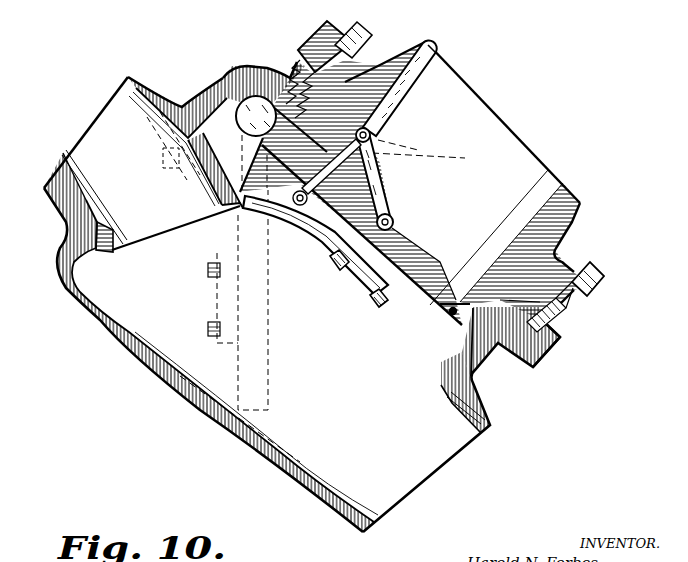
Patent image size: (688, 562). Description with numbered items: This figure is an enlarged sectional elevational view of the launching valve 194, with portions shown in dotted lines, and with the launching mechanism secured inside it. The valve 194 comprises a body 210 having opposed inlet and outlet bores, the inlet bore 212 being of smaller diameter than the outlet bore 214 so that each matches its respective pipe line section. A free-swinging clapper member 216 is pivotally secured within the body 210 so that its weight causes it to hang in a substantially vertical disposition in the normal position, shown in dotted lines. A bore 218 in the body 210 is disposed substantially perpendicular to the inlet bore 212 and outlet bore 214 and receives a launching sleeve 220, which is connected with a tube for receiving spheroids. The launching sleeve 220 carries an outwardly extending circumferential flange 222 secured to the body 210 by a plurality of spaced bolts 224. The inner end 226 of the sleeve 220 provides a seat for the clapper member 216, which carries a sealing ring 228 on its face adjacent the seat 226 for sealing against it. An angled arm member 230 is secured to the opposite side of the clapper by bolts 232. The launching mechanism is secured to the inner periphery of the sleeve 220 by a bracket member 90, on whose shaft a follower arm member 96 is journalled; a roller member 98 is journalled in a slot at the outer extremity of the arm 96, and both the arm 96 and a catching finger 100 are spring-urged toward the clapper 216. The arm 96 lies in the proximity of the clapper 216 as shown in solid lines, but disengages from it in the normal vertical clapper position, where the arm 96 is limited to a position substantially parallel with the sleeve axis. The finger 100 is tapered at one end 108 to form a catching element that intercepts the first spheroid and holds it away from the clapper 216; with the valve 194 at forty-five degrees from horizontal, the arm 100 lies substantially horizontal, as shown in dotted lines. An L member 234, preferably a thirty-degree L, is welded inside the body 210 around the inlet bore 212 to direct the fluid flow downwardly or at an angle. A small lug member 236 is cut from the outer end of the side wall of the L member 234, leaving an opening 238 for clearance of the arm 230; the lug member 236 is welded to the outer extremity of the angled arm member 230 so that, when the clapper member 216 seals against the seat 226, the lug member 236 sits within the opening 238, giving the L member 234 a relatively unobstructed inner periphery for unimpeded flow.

The bracket member 90 is at (448, 66).
The follower arm member 96 is at (335, 163).
The roller member 98 is at (297, 206).
The catching finger 100 is at (408, 103).
The tapered end 108 is at (436, 54).
The valve 194 is at (225, 74).
The body 210 is at (288, 462).
The inlet bore 212 is at (140, 98).
The outlet bore 214 is at (451, 404).
The clapper member 216 is at (262, 367).
The bore 218 is at (494, 282).
The launching sleeve 220 is at (580, 206).
The circumferential flange 222 is at (598, 305).
The bolts 224 is at (607, 258).
The inner end 226 is at (440, 316).
The sealing ring 228 is at (267, 162).
The angled arm member 230 is at (224, 235).
The bolts 232 is at (208, 329).
The L member 234 is at (113, 250).
The lug member 236 is at (164, 150).
The opening 238 is at (220, 203).